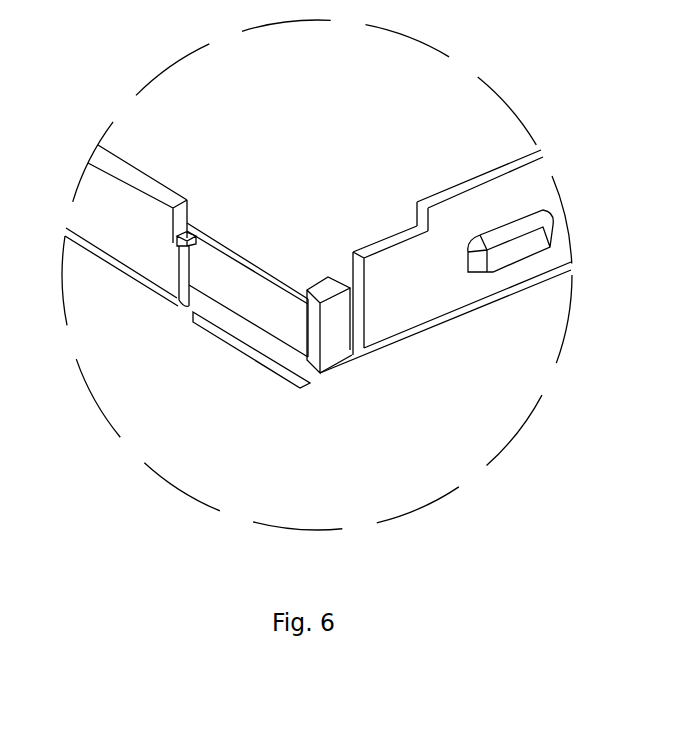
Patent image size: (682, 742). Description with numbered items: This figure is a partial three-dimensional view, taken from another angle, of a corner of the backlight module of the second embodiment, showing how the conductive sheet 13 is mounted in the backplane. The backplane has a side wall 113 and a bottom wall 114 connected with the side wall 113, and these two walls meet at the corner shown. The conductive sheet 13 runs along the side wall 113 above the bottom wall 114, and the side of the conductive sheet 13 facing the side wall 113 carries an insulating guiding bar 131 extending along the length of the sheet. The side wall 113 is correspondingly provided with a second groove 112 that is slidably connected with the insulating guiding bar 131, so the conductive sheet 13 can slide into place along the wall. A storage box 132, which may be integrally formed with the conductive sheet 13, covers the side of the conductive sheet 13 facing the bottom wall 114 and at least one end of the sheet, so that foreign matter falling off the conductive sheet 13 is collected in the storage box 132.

The side wall 113 is at (103, 237).
The second groove 112 is at (180, 243).
The insulating guiding bar 131 is at (192, 248).
The conductive sheet 13 is at (240, 303).
The bottom wall 114 is at (279, 378).
The storage box 132 is at (330, 325).